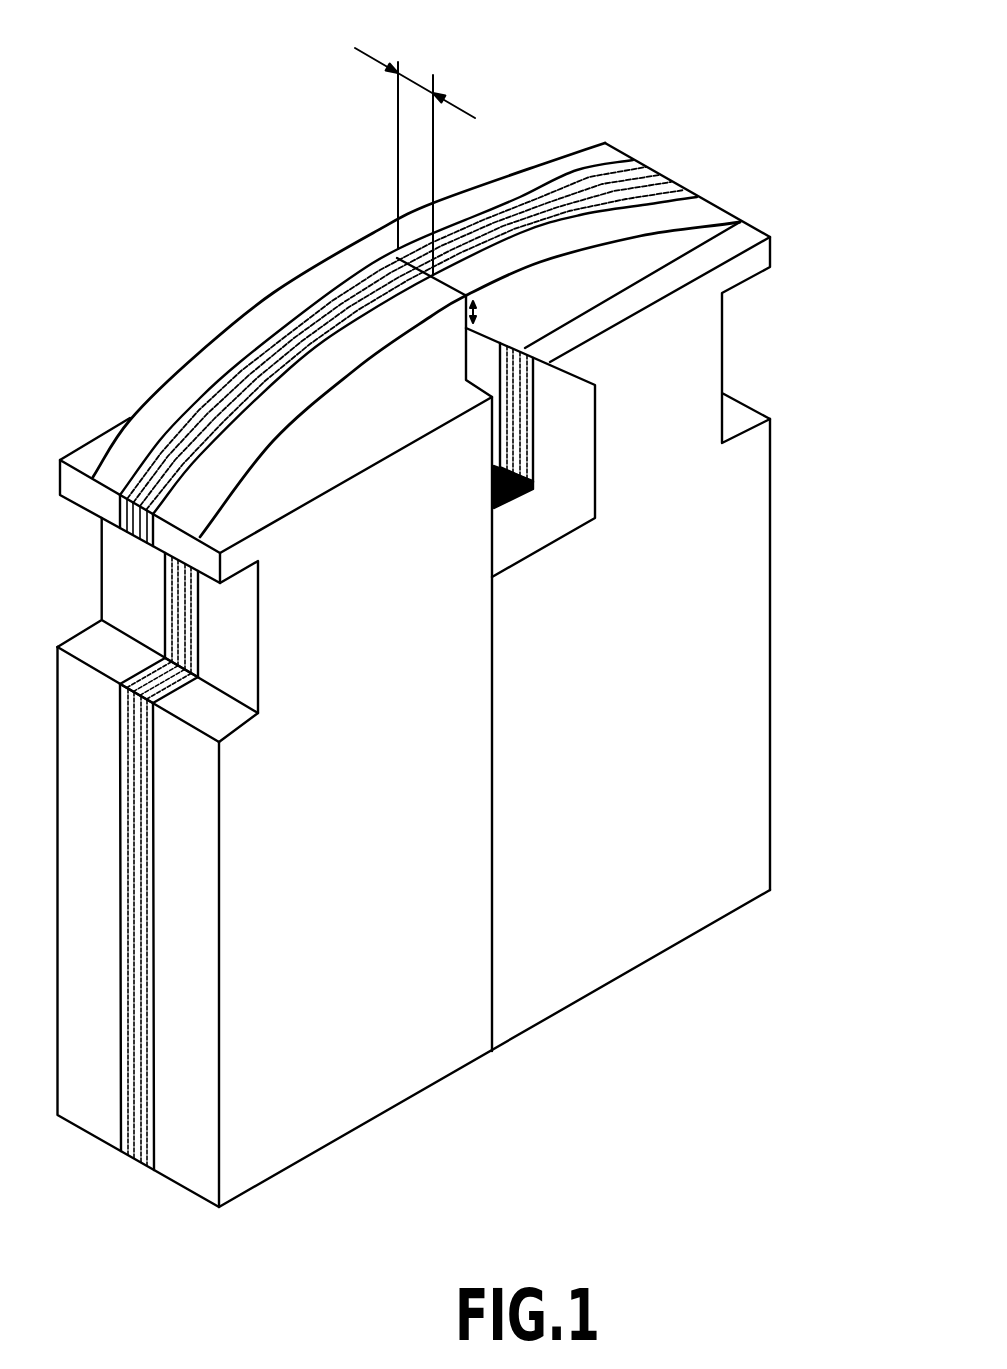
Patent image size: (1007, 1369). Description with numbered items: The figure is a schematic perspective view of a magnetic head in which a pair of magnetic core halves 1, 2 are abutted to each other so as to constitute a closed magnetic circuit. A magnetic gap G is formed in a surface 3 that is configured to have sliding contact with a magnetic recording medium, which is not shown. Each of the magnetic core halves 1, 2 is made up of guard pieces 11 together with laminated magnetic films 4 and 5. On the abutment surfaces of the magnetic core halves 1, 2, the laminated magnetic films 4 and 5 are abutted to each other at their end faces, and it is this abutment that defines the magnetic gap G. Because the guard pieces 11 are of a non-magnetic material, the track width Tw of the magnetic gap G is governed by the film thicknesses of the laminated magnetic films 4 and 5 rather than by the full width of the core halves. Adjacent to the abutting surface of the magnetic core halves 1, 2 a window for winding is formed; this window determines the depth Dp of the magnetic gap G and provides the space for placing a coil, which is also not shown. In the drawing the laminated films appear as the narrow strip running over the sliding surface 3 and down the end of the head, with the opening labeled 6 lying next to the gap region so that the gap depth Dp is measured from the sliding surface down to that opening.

The magnetic core half 1 is at (725, 655).
The magnetic core half 2 is at (397, 1053).
The surface 3 is at (632, 170).
The laminated magnetic film 4 is at (680, 184).
The laminated magnetic film 5 is at (240, 367).
The winding window 6 is at (583, 445).
The guard pieces 11 is at (100, 1083).
The magnetic gap G is at (393, 253).
The track width Tw is at (406, 137).
The depth Dp is at (500, 313).